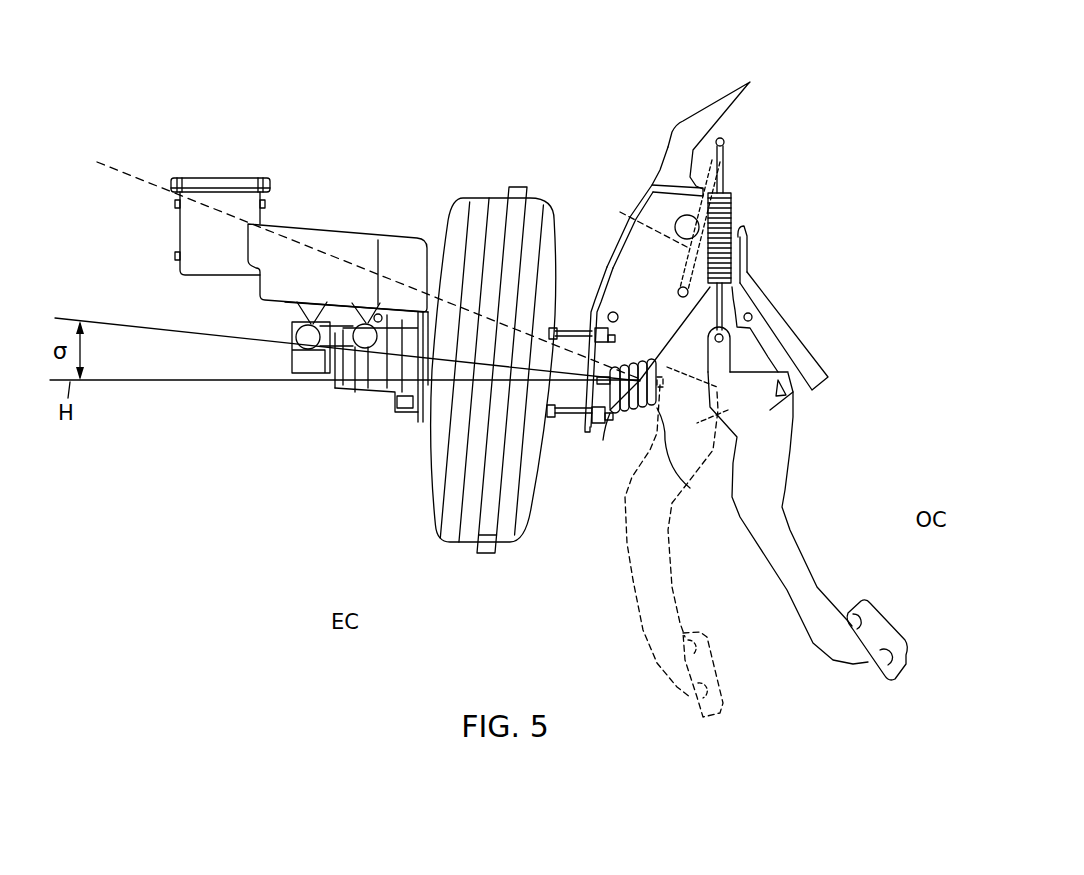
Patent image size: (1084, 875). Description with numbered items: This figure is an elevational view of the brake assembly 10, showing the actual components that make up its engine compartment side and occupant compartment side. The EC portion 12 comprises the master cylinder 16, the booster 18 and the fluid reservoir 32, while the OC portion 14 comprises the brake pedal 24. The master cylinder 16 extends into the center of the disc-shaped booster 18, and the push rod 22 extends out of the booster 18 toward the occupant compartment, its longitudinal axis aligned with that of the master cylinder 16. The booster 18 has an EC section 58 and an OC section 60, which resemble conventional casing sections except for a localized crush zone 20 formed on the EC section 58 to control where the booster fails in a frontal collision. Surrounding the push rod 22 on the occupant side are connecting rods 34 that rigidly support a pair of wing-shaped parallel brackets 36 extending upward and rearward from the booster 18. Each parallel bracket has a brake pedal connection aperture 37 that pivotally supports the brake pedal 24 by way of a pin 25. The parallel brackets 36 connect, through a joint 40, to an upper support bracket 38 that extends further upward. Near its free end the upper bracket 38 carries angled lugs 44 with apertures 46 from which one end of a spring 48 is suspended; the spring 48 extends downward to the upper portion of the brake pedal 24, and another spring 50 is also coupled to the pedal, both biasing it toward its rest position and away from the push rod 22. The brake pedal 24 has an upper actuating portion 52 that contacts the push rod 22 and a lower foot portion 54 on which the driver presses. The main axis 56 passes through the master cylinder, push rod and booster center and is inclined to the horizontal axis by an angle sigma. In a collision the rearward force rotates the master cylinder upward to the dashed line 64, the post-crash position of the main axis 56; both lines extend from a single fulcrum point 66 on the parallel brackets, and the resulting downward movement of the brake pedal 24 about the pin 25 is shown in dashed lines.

The brake assembly 10 is at (604, 80).
The EC portion 12 is at (441, 126).
The OC portion 14 is at (912, 400).
The master cylinder 16 is at (370, 393).
The booster 18 is at (487, 557).
The crush zone 20 is at (474, 394).
The push rod 22 is at (628, 413).
The brake pedal 24 is at (797, 530).
The pin 25 is at (679, 296).
The fluid reservoir 32 is at (214, 177).
The connecting rods 34 is at (562, 418).
The parallel brackets 36 is at (627, 241).
The brake pedal connection aperture 37 is at (678, 288).
The upper support bracket 38 is at (688, 125).
The joint 40 is at (678, 220).
The angled lugs 44 is at (724, 129).
The apertures 46 is at (727, 143).
The spring 48 is at (745, 250).
The spring 50 is at (619, 212).
The upper actuating portion 52 is at (758, 353).
The lower foot portion 54 is at (863, 603).
The main axis 56 is at (105, 323).
The EC section 58 is at (433, 506).
The OC section 60 is at (505, 535).
The dashed line 64 is at (119, 167).
The fulcrum point 66 is at (686, 478).